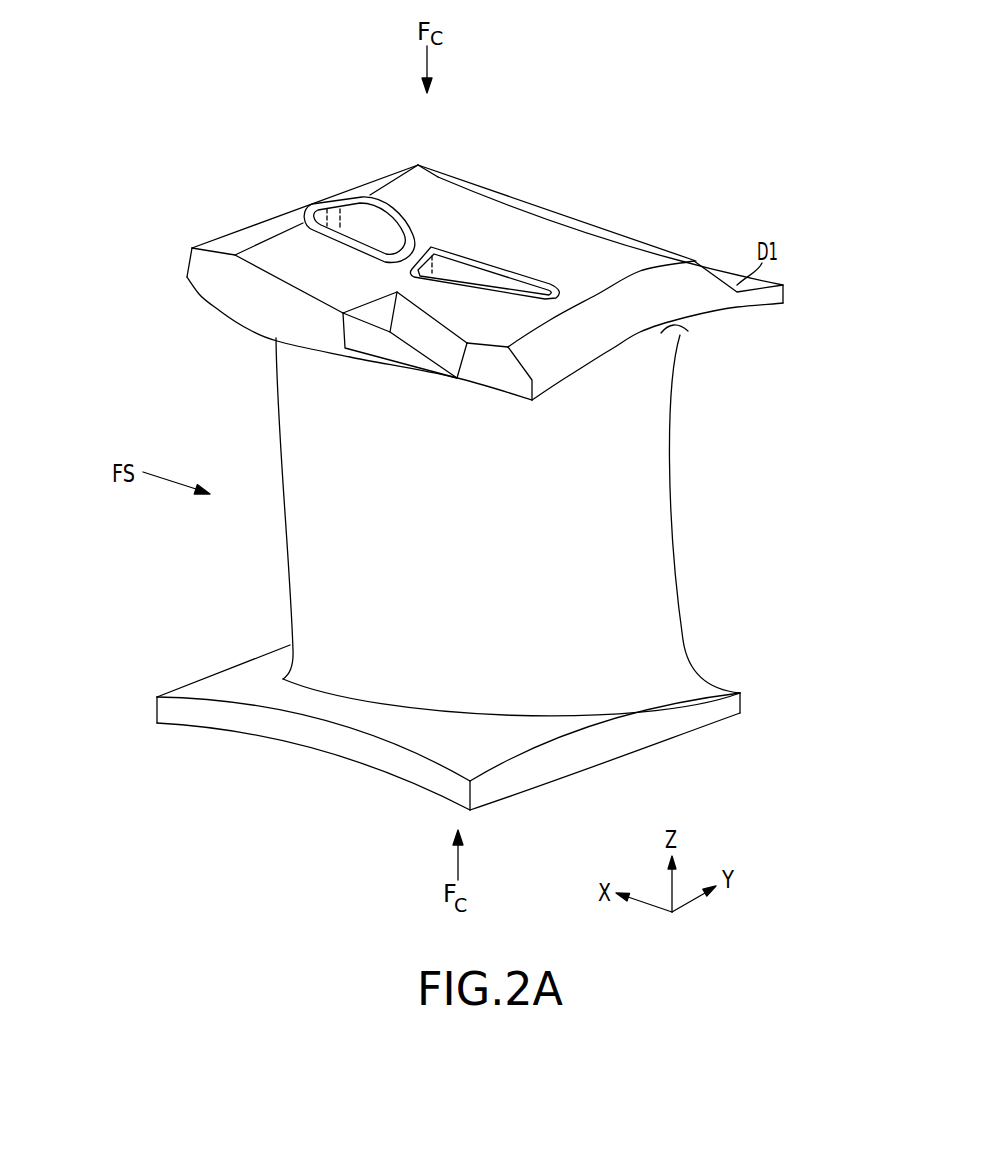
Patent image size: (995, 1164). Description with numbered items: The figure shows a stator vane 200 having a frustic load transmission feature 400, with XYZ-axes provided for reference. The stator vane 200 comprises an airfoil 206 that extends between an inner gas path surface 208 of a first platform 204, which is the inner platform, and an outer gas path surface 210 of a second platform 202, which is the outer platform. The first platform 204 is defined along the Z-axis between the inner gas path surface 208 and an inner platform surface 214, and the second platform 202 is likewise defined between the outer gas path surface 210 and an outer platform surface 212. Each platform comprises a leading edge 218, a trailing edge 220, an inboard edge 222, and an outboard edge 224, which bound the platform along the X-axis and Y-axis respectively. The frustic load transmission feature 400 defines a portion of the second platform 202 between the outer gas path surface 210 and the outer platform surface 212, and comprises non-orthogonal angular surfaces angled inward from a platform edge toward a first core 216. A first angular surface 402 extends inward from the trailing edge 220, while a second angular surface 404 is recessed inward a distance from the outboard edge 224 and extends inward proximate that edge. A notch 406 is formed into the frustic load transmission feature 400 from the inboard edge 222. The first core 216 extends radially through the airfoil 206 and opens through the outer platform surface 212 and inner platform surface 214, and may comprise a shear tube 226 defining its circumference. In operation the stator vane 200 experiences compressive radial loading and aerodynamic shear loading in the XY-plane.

The stator vane 200 is at (654, 100).
The second platform 202 is at (246, 168).
The first platform 204 is at (691, 758).
The airfoil 206 is at (517, 552).
The inner gas path surface 208 is at (206, 684).
The outer gas path surface 210 is at (220, 310).
The outer platform surface 212 is at (268, 250).
The inner platform surface 214 is at (258, 728).
The first core 216 is at (372, 236).
The leading edge 218 is at (196, 260).
The trailing edge 220 is at (682, 331).
The inboard edge 222 is at (278, 314).
The outboard edge 224 is at (668, 248).
The shear tube 226 is at (315, 203).
The frustic load transmission feature 400 is at (639, 212).
The first angular surface 402 is at (632, 321).
The second angular surface 404 is at (537, 206).
The notch 406 is at (374, 312).